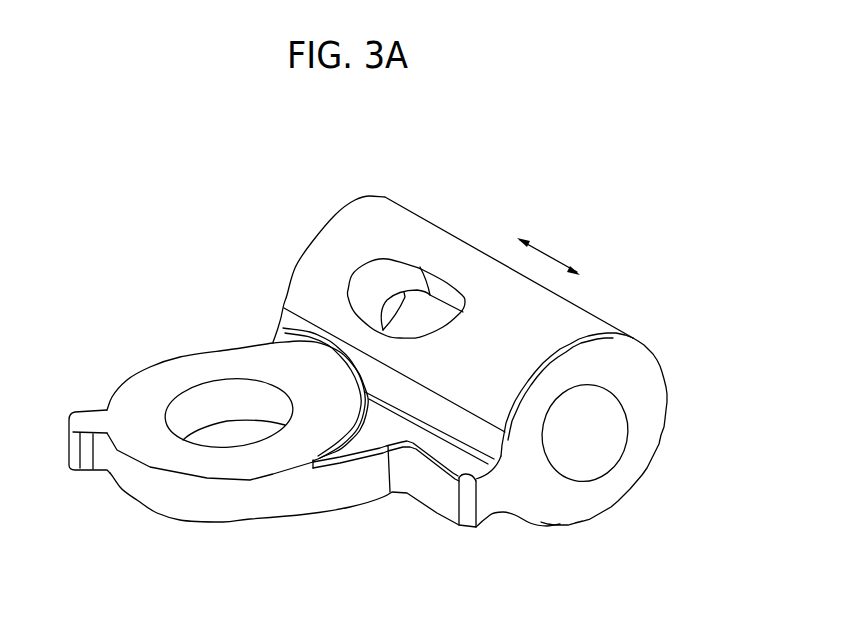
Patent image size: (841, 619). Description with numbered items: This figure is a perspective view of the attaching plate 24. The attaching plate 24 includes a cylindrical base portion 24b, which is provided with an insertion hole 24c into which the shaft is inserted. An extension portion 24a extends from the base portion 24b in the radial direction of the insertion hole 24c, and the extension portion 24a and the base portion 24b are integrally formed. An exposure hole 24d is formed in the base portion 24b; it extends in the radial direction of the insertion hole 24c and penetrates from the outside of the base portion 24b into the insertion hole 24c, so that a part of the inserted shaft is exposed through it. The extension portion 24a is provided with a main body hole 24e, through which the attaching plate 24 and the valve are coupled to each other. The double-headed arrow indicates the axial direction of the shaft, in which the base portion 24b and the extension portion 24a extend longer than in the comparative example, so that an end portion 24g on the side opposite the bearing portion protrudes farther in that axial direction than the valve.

The attaching plate 24 is at (203, 225).
The extension portion 24a is at (150, 393).
The base portion 24b is at (365, 222).
The insertion hole 24c is at (613, 422).
The exposure hole 24d is at (412, 280).
The main body hole 24e is at (217, 400).
The end portion 24g is at (515, 490).